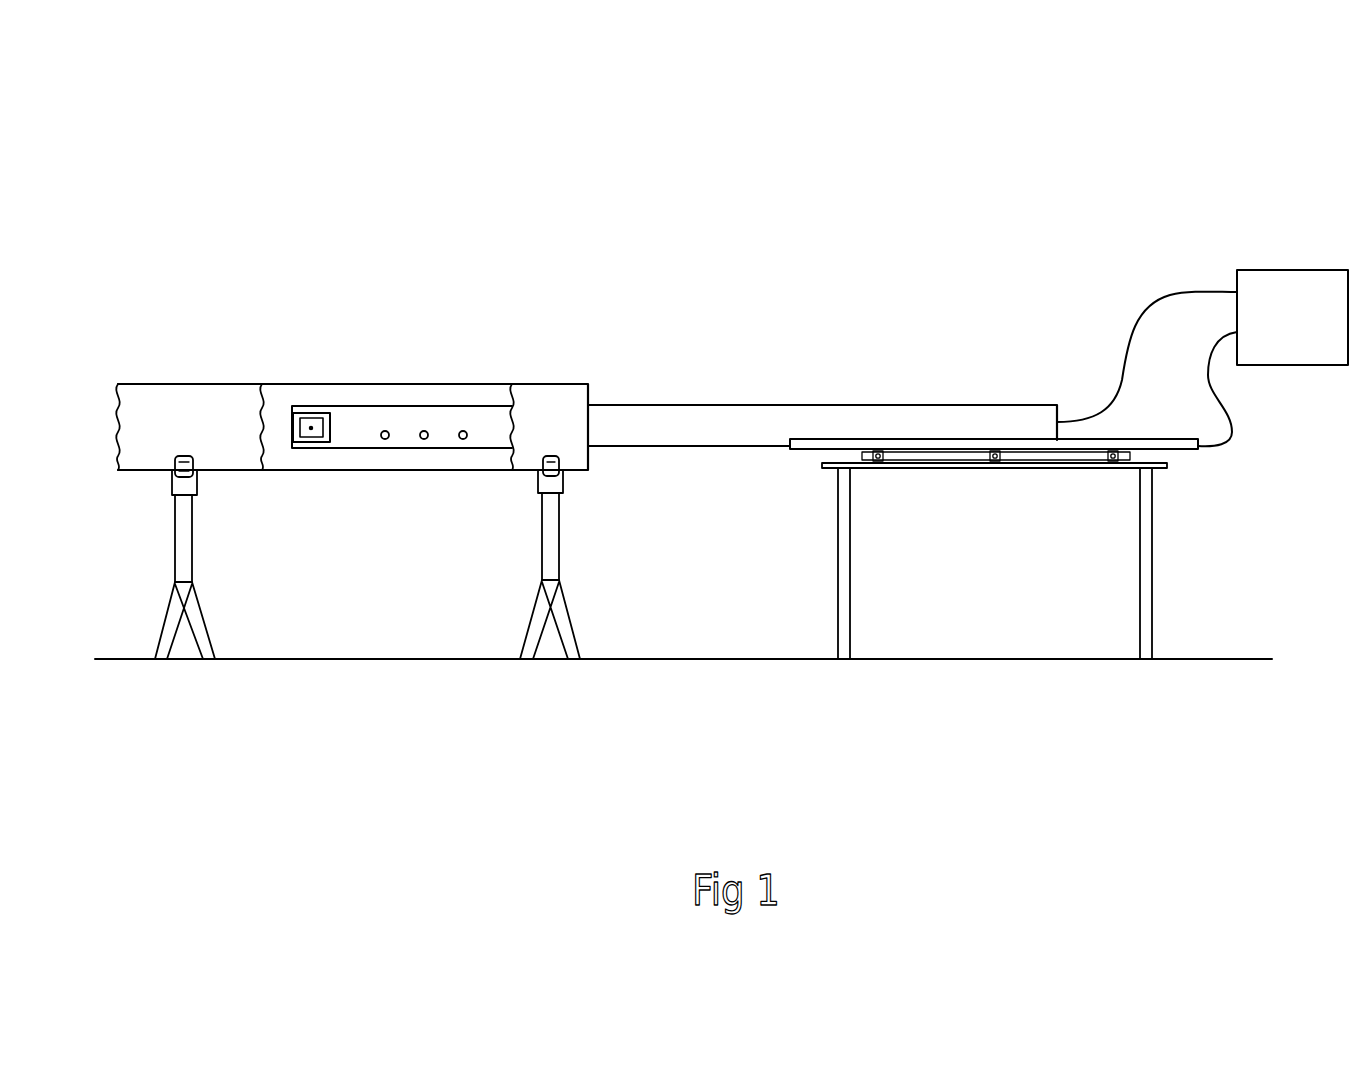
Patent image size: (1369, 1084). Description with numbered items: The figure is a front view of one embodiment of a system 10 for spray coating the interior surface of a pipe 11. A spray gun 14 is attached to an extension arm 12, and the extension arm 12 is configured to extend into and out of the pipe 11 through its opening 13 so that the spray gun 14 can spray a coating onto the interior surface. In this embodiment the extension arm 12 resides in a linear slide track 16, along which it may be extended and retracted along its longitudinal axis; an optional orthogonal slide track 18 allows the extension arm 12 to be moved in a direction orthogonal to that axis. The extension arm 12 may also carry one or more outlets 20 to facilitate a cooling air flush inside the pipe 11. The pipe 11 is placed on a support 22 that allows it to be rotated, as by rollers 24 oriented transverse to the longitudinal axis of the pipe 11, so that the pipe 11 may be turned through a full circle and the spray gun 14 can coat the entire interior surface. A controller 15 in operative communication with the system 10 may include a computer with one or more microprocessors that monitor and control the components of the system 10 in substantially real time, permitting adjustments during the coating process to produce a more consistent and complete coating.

The system 10 is at (929, 360).
The pipe 11 is at (192, 385).
The extension arm 12 is at (745, 406).
The opening 13 is at (600, 397).
The spray gun 14 is at (311, 430).
The controller 15 is at (1339, 359).
The linear slide track 16 is at (805, 448).
The orthogonal slide track 18 is at (878, 462).
The outlets 20 is at (424, 439).
The support 22 is at (541, 565).
The rollers 24 is at (560, 463).